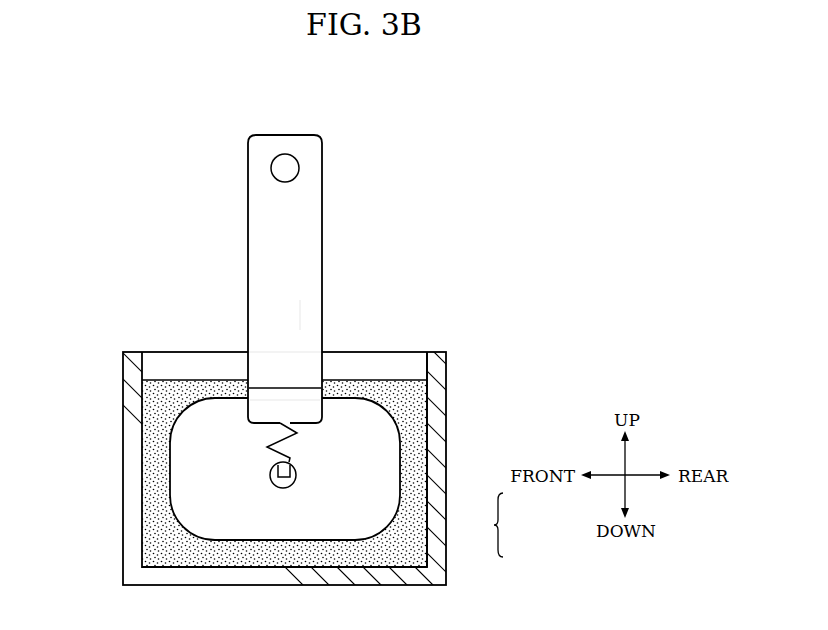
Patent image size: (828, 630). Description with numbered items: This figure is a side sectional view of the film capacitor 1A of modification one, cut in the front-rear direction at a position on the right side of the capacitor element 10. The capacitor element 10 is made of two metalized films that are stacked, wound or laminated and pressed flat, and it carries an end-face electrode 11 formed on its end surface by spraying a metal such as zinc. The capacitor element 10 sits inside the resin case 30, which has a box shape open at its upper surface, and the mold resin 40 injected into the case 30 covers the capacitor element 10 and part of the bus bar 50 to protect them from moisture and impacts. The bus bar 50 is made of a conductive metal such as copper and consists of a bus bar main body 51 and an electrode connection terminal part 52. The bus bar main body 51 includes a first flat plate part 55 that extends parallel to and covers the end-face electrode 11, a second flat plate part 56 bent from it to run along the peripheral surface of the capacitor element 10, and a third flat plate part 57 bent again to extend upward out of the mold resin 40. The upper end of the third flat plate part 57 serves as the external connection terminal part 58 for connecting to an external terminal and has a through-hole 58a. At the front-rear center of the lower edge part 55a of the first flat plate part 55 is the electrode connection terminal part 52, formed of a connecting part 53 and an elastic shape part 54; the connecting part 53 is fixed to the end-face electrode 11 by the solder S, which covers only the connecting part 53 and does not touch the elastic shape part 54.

The film capacitor 1A is at (160, 186).
The capacitor element 10 is at (217, 394).
The end-face electrode 11 is at (445, 393).
The case 30 is at (447, 441).
The mold resin 40 is at (363, 375).
The bus bar 50 is at (277, 292).
The bus bar main body 51 is at (322, 255).
The electrode connection terminal part 52 is at (400, 496).
The connecting part 53 is at (296, 478).
The elastic shape part 54 is at (298, 437).
The first flat plate part 55 is at (263, 405).
The lower edge part 55a is at (265, 447).
The second flat plate part 56 is at (282, 386).
The third flat plate part 57 is at (307, 320).
The external connection terminal part 58 is at (318, 145).
The through-hole 58a is at (272, 160).
The solder S is at (277, 491).